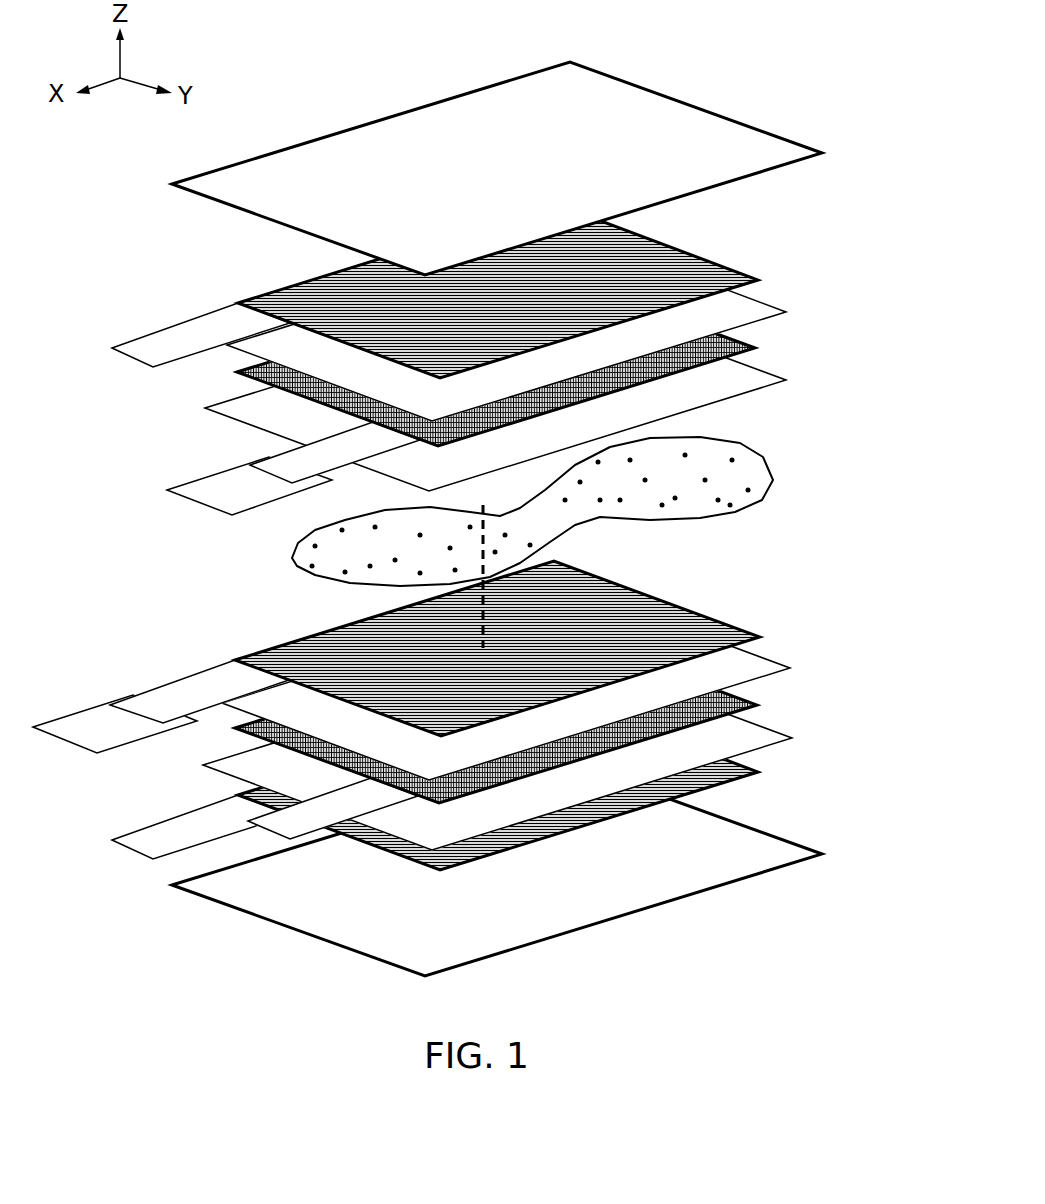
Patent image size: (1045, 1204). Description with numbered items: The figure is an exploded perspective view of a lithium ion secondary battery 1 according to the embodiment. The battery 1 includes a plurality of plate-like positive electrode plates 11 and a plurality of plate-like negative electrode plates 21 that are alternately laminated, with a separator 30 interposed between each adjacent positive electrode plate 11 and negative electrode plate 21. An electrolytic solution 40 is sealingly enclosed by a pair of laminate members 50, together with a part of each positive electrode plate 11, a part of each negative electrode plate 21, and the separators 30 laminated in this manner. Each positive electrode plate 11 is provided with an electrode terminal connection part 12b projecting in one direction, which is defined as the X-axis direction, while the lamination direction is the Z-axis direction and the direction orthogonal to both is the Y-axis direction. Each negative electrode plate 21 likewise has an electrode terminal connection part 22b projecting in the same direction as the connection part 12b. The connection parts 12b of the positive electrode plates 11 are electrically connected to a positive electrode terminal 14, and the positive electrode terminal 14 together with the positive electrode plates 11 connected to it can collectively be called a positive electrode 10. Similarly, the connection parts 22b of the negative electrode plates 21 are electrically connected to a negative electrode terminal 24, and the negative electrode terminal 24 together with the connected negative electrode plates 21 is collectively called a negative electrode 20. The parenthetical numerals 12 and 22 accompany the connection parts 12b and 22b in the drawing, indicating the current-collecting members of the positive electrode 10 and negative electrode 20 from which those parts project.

The lithium ion secondary battery 1 is at (905, 55).
The positive electrode 10 is at (473, 603).
The positive electrode plate 11 is at (747, 343).
The negative electrode current collector 12 is at (241, 677).
The electrode terminal connection part 12b is at (280, 452).
The positive electrode terminal 14 is at (185, 498).
The negative electrode 20 is at (458, 537).
The negative electrode plate 21 is at (683, 252).
The positive electrode current collector 22 is at (180, 563).
The electrode terminal connection part 22b is at (147, 334).
The negative electrode terminal 24 is at (78, 712).
The separator 30 is at (762, 299).
The electrolytic solution 40 is at (767, 460).
The laminate member 50 is at (697, 101).